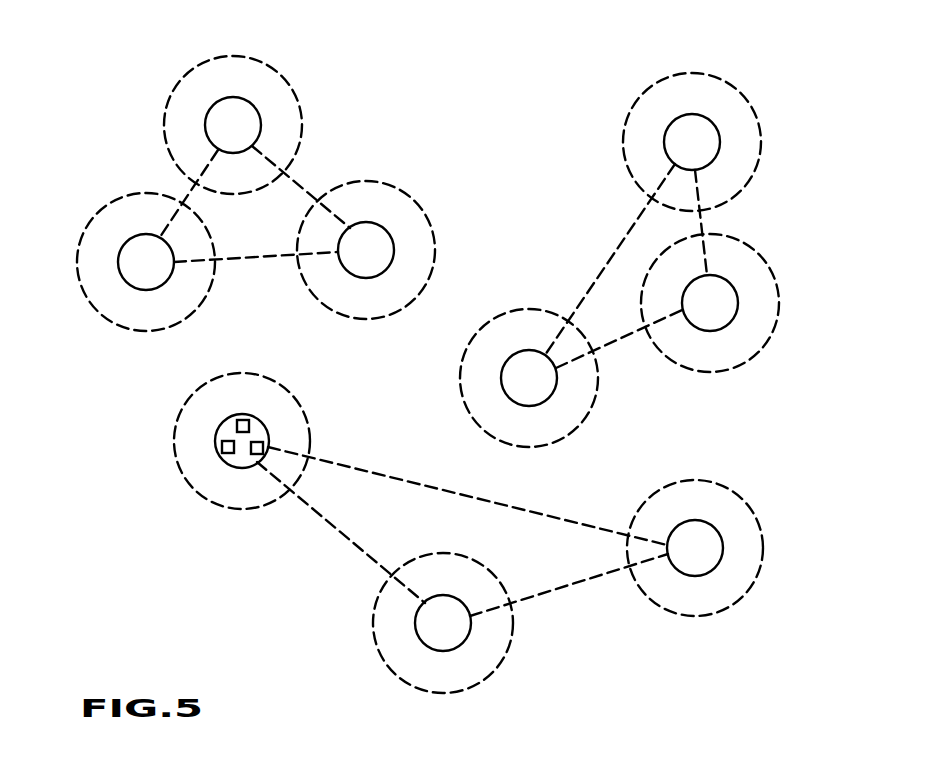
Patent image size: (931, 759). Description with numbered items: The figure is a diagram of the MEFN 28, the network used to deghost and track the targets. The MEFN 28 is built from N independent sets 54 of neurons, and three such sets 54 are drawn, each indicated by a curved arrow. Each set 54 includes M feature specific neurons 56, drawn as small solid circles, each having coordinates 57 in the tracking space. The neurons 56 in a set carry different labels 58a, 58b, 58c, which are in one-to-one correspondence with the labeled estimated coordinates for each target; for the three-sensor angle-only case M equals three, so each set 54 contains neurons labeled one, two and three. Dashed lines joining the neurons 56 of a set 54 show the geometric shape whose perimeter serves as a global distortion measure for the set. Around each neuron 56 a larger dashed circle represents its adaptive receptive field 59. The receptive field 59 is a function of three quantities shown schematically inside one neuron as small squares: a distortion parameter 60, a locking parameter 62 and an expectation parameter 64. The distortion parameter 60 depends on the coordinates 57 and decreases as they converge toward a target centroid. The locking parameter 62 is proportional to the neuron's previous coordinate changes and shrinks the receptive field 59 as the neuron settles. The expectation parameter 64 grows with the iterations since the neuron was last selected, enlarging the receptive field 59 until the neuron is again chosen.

The MEFN 28 is at (494, 57).
The independent set of neurons 54 is at (100, 134).
The feature specific neuron 56 is at (247, 98).
The coordinates 57 is at (220, 118).
The label 58a is at (252, 127).
The label 58b is at (374, 262).
The label 58c is at (152, 273).
The adaptive receptive field 59 is at (388, 183).
The distortion parameter 60 is at (248, 421).
The locking parameter 62 is at (225, 447).
The expectation parameter 64 is at (254, 450).